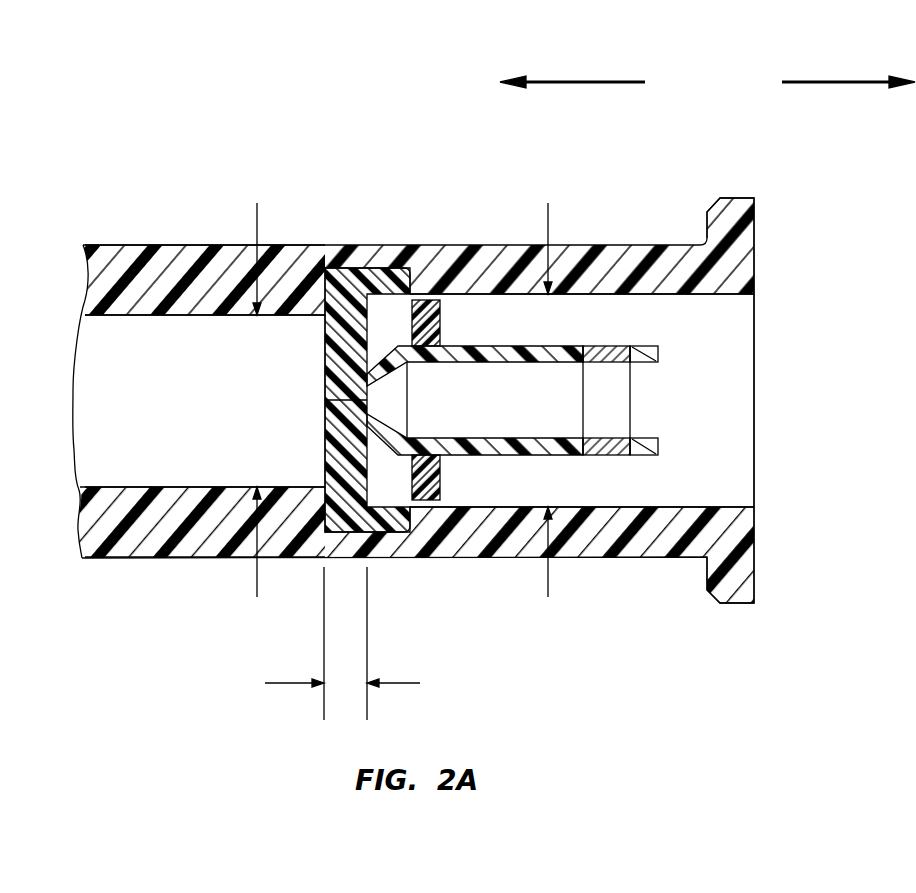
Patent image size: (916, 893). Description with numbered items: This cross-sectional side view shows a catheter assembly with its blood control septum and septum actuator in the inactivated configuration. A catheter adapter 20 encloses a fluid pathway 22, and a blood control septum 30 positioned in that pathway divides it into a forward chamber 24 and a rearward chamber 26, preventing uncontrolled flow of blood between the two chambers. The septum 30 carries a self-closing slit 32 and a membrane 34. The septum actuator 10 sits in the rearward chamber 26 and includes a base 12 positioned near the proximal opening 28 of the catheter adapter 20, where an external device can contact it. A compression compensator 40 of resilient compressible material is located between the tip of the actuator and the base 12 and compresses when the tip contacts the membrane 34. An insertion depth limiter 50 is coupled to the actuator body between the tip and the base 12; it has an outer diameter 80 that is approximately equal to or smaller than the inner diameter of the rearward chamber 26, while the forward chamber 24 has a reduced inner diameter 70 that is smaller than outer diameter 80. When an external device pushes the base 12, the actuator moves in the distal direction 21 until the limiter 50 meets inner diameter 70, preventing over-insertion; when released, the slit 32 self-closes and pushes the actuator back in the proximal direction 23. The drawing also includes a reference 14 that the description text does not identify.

The septum actuator 10 is at (543, 429).
The base 12 is at (656, 454).
The disc thickness 14 is at (342, 643).
The catheter adapter 20 is at (471, 387).
The distal direction 21 is at (573, 82).
The fluid pathway 22 is at (243, 342).
The proximal direction 23 is at (845, 82).
The forward chamber 24 is at (174, 450).
The rearward chamber 26 is at (596, 490).
The proximal opening 28 is at (745, 308).
The blood control septum 30 is at (276, 349).
The slit 32 is at (325, 420).
The membrane 34 is at (324, 378).
The compression compensator 40 is at (605, 347).
The insertion depth limiter 50 is at (437, 305).
The inner diameter 70 is at (257, 215).
The outer diameter 80 is at (548, 580).